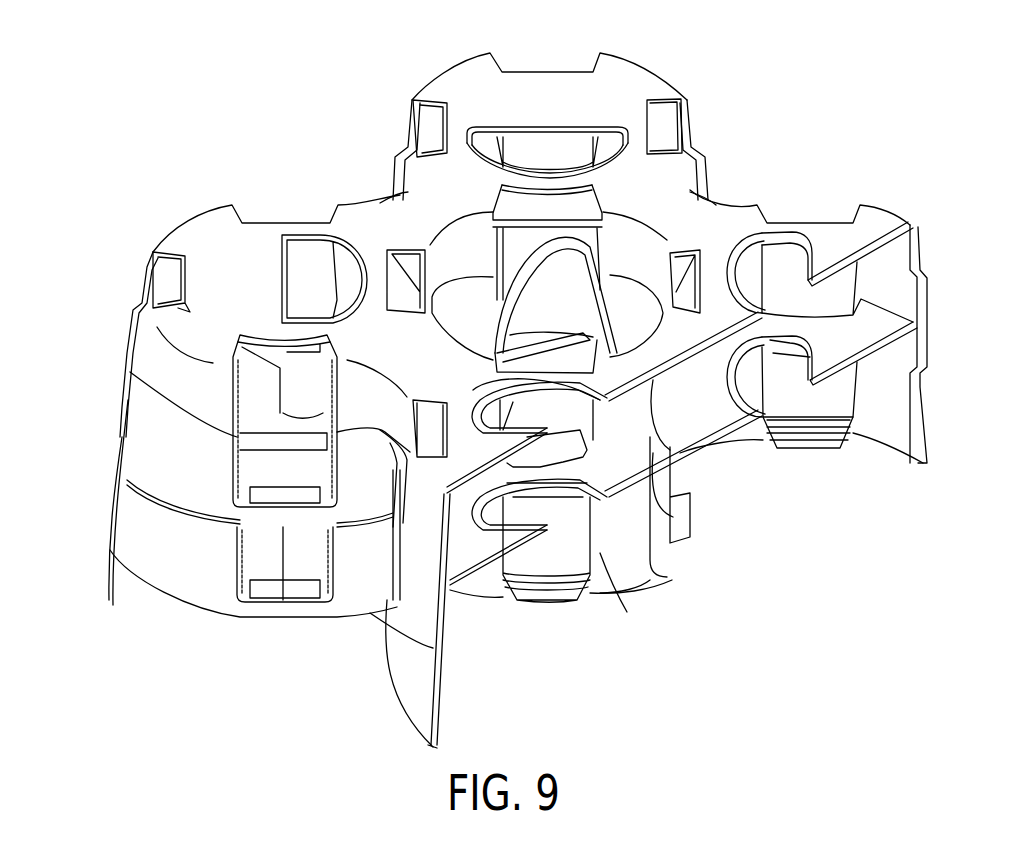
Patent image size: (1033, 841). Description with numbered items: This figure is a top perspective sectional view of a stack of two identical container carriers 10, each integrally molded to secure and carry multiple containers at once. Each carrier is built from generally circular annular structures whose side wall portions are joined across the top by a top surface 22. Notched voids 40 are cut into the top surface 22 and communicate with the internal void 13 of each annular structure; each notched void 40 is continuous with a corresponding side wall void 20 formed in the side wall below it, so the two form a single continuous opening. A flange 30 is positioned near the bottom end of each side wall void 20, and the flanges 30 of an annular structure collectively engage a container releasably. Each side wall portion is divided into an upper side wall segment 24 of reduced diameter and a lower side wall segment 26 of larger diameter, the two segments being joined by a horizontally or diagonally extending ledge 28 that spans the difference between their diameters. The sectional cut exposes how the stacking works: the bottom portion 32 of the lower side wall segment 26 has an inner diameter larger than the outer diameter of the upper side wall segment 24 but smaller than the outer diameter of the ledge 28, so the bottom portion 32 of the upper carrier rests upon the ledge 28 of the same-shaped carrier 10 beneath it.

The container carrier 10 is at (893, 82).
The internal void 13 is at (483, 673).
The side wall void 20 is at (570, 553).
The top surface 22 is at (628, 87).
The upper side wall segment 24 is at (167, 371).
The lower side wall segment 26 is at (190, 457).
The ledge 28 is at (153, 422).
The flange 30 is at (548, 580).
The bottom portion 32 is at (283, 527).
The notched void 40 is at (170, 279).